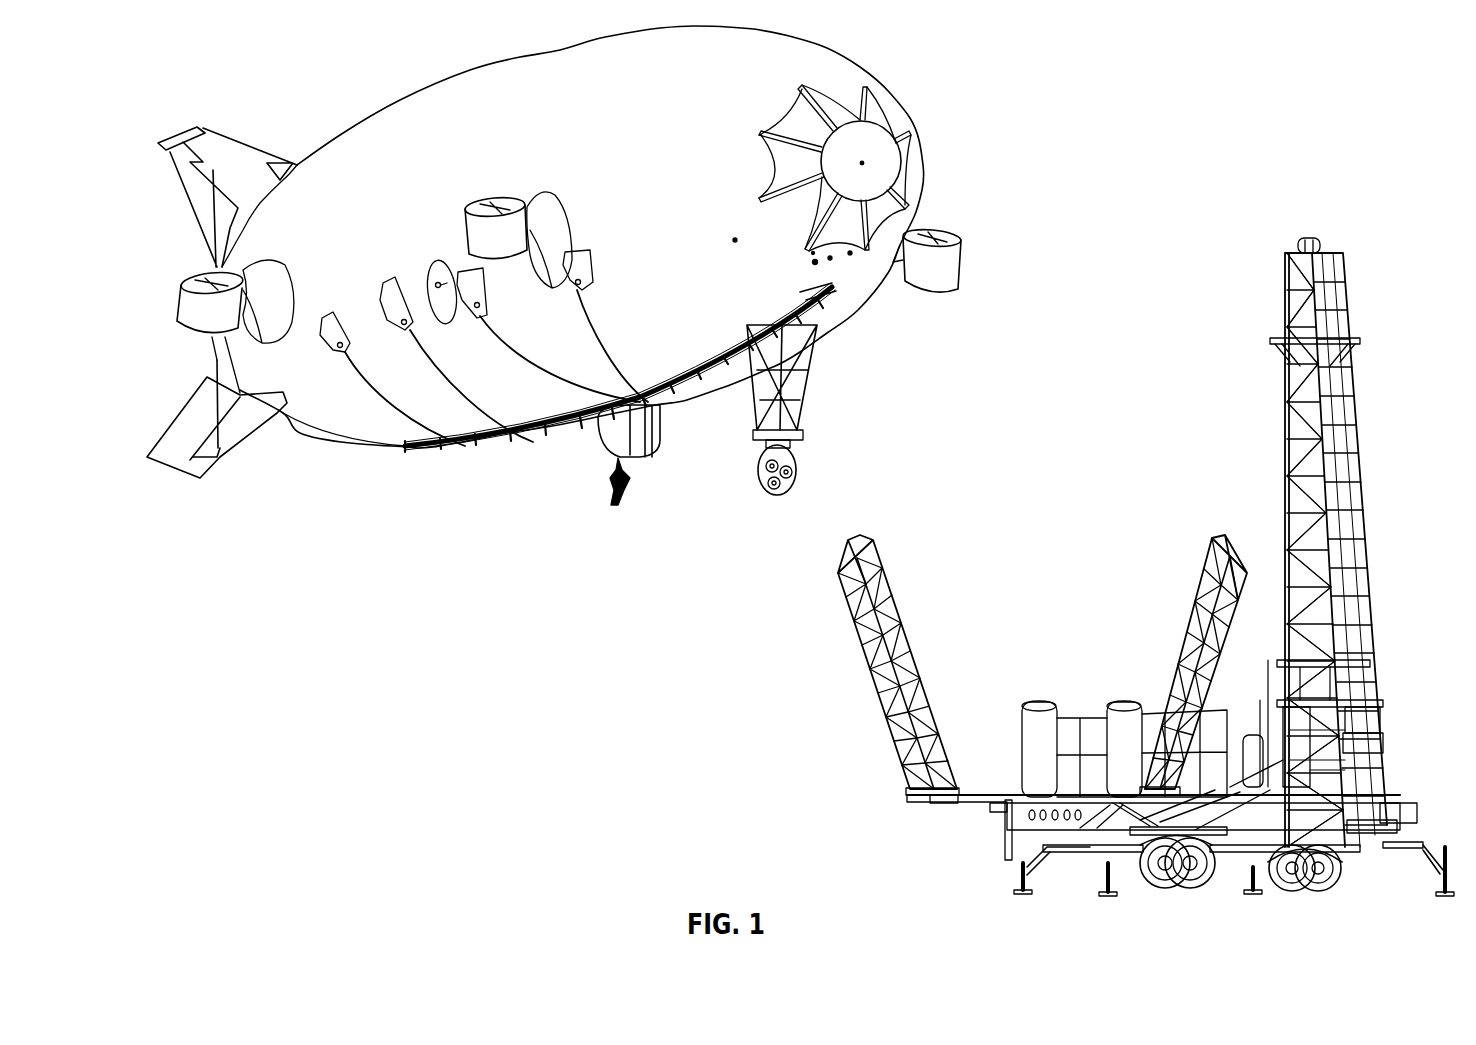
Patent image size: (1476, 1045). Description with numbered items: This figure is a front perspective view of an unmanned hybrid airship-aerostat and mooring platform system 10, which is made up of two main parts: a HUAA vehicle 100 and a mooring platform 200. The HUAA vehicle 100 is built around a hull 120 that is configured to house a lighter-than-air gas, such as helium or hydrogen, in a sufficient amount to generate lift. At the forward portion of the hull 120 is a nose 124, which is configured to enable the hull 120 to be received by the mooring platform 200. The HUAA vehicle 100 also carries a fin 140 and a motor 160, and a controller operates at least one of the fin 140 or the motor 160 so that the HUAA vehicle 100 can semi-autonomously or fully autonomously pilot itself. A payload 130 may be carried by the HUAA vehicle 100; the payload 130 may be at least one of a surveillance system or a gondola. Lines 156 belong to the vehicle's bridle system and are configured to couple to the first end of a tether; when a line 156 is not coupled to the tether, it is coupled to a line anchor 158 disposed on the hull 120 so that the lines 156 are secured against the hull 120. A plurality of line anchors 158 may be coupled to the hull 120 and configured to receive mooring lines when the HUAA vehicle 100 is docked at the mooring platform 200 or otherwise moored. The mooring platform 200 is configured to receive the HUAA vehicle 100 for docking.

The unmanned hybrid airship-aerostat and mooring platform system 10 is at (904, 50).
The HUAA vehicle 100 is at (587, 530).
The hull 120 is at (398, 106).
The nose 124 is at (881, 146).
The payload 130 is at (640, 455).
The fin 140 is at (177, 153).
The line 156 is at (460, 407).
The line anchor 158 is at (509, 449).
The motor 160 is at (466, 222).
The mooring platform 200 is at (1377, 213).